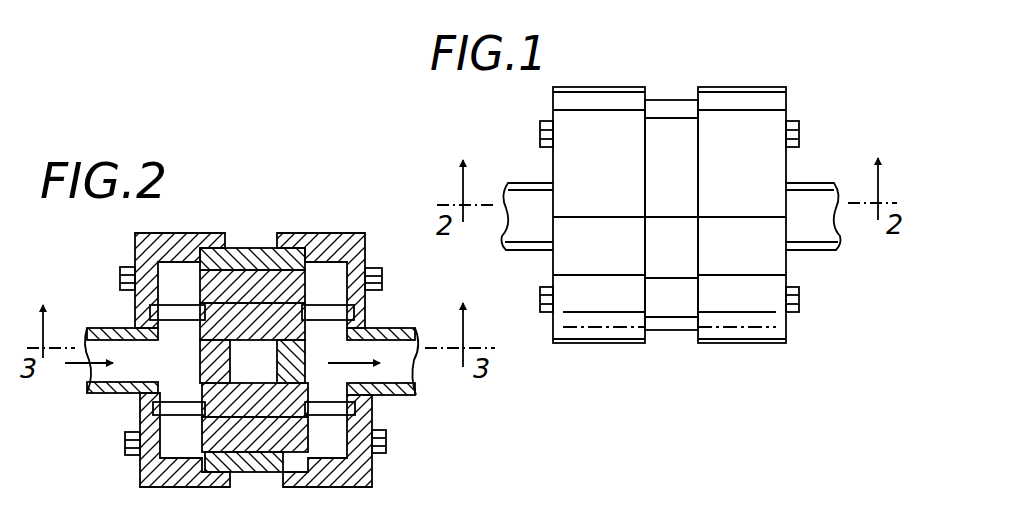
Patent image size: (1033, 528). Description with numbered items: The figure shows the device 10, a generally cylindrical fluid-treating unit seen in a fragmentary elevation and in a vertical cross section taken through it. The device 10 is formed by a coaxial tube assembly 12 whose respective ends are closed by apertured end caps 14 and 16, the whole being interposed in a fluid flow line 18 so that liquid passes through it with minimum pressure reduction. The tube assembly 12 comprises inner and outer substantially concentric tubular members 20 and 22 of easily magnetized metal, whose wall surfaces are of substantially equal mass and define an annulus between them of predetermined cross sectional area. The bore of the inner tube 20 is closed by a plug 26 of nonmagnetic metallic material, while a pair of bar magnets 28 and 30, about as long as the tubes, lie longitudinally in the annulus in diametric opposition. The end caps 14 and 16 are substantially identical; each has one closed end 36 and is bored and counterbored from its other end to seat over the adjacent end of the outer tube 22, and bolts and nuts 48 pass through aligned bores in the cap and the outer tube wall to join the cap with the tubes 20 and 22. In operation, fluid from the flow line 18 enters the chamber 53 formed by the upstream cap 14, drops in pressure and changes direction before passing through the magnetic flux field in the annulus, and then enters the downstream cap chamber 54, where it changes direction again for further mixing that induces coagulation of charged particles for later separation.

In FIG. 1, the device 10 is at (749, 66).
In FIG. 1, the coaxial tube assembly 12 is at (670, 97).
In FIG. 1, the end cap 14 is at (602, 85).
In FIG. 2, the end cap 14 is at (190, 238).
In FIG. 1, the end cap 16 is at (767, 84).
In FIG. 2, the end cap 16 is at (333, 238).
In FIG. 1, the fluid flow line 18 is at (520, 253).
In FIG. 2, the fluid flow line 18 is at (98, 395).
In FIG. 2, the inner tubular member 20 is at (325, 328).
In FIG. 2, the outer tubular member 22 is at (237, 247).
In FIG. 2, the plug 26 is at (200, 364).
In FIG. 2, the bar magnet 28 is at (287, 280).
In FIG. 2, the bar magnet 30 is at (262, 442).
In FIG. 1, the closed end 36 is at (792, 324).
In FIG. 2, the closed end 36 is at (373, 473).
In FIG. 2, the bolts and nuts 48 is at (388, 443).
In FIG. 2, the chamber 53 is at (172, 278).
In FIG. 2, the downstream cap chamber 54 is at (330, 277).